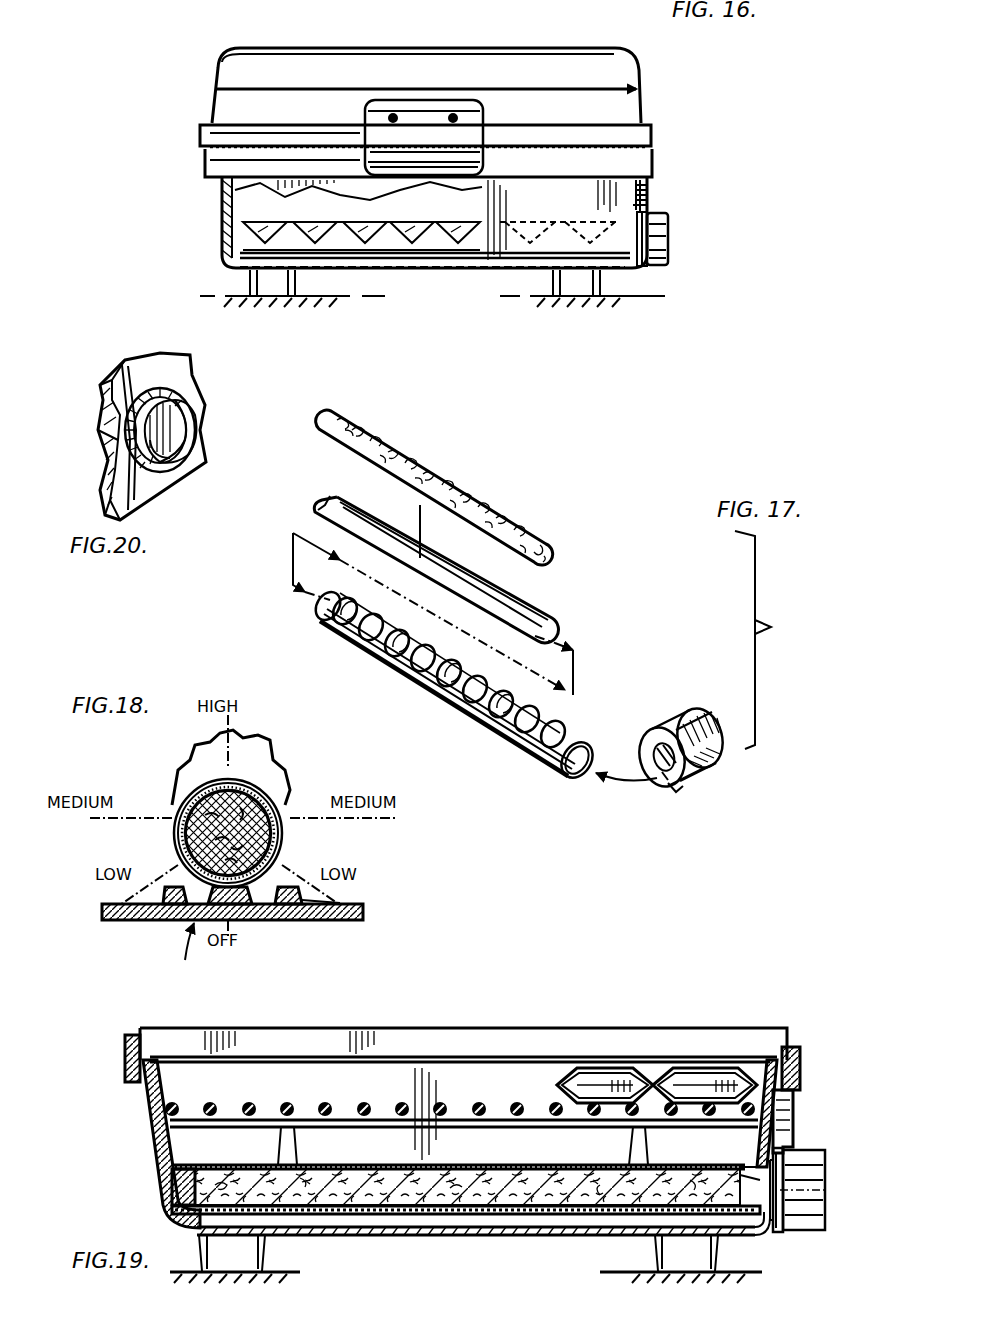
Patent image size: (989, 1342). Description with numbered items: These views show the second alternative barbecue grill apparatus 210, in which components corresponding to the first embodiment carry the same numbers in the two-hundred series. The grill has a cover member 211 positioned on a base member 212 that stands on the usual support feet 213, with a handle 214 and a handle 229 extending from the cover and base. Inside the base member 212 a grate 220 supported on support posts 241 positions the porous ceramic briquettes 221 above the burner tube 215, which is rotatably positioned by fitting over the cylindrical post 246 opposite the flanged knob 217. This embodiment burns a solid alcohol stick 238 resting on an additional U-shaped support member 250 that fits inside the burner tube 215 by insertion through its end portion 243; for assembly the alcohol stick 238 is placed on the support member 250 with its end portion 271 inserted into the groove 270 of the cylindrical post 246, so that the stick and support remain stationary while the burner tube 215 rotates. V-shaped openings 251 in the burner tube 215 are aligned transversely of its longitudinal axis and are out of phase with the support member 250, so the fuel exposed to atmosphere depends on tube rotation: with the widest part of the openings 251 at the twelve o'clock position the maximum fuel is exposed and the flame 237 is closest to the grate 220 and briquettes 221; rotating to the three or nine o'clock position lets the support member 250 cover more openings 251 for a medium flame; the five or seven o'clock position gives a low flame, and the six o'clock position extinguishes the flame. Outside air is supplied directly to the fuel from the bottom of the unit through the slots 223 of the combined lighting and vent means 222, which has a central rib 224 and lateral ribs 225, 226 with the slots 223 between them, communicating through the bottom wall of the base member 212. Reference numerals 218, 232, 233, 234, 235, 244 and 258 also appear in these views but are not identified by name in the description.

In FIG. 16, the barbecue grill apparatus 210 is at (442, 180).
In FIG. 16, the cover member 211 is at (477, 58).
In FIG. 16, the base member 212 is at (225, 228).
In FIG. 20, the base member 212 is at (126, 361).
In FIG. 18, the base member 212 is at (128, 919).
In FIG. 19, the base member 212 is at (798, 1073).
In FIG. 16, the support feet 213 is at (603, 299).
In FIG. 19, the support feet 213 is at (241, 1247).
In FIG. 16, the handle 214 is at (375, 116).
In FIG. 16, the burner tube 215 is at (388, 241).
In FIG. 17, the burner tube 215 is at (471, 685).
In FIG. 18, the burner tube 215 is at (278, 841).
In FIG. 19, the burner tube 215 is at (501, 1235).
In FIG. 16, the flanged knob 217 is at (670, 228).
In FIG. 17, the flanged knob 217 is at (720, 761).
In FIG. 19, the flanged knob 217 is at (828, 1182).
In FIG. 16, the end wall 218 is at (652, 196).
In FIG. 19, the end wall 218 is at (789, 1134).
In FIG. 19, the grate 220 is at (183, 1128).
In FIG. 19, the porous ceramic briquettes 221 is at (705, 1064).
In FIG. 18, the combined lighting and vent means 222 is at (199, 949).
In FIG. 18, the slots 223 is at (272, 908).
In FIG. 18, the central rib 224 is at (250, 910).
In FIG. 18, the lateral rib 225 is at (350, 905).
In FIG. 18, the lateral rib 226 is at (163, 900).
In FIG. 16, the handle 229 is at (377, 163).
In FIG. 17, the tube end 232 is at (582, 741).
In FIG. 16, the hub 233 is at (648, 264).
In FIG. 17, the hub 233 is at (670, 723).
In FIG. 19, the hub 233 is at (783, 1232).
In FIG. 17, the tab 234 is at (702, 802).
In FIG. 17, the slot 235 is at (668, 797).
In FIG. 18, the flame 237 is at (281, 753).
In FIG. 16, the solid alcohol stick 238 is at (262, 196).
In FIG. 17, the solid alcohol stick 238 is at (549, 540).
In FIG. 19, the solid alcohol stick 238 is at (582, 1212).
In FIG. 19, the support posts 241 is at (284, 1146).
In FIG. 17, the end portion 243 is at (449, 596).
In FIG. 16, the flange 244 is at (640, 272).
In FIG. 17, the flange 244 is at (700, 792).
In FIG. 19, the flange 244 is at (776, 1236).
In FIG. 20, the cylindrical post 246 is at (172, 394).
In FIG. 19, the cylindrical post 246 is at (170, 1186).
In FIG. 16, the support member 250 is at (323, 243).
In FIG. 17, the support member 250 is at (554, 618).
In FIG. 18, the support member 250 is at (180, 834).
In FIG. 19, the support member 250 is at (432, 1216).
In FIG. 16, the V-shaped openings 251 is at (352, 222).
In FIG. 17, the V-shaped openings 251 is at (396, 673).
In FIG. 18, the V-shaped openings 251 is at (190, 800).
In FIG. 19, the V-shaped openings 251 is at (417, 1166).
In FIG. 18, the food 258 is at (265, 810).
In FIG. 20, the groove 270 is at (165, 466).
In FIG. 17, the end portion 271 is at (331, 500).